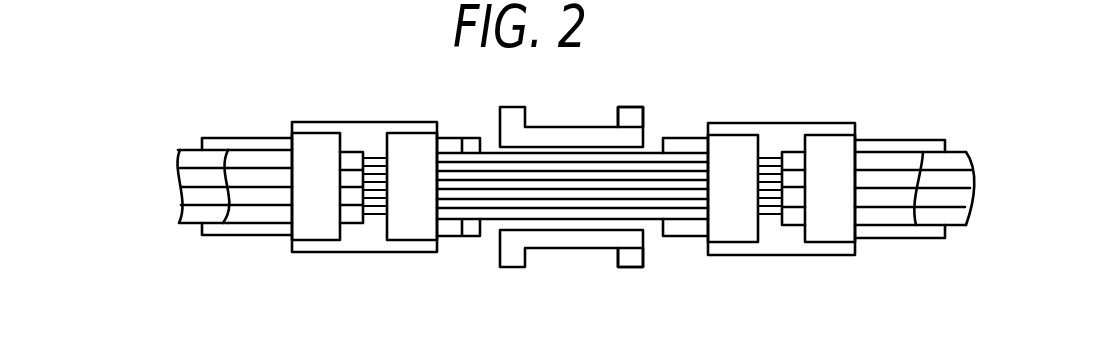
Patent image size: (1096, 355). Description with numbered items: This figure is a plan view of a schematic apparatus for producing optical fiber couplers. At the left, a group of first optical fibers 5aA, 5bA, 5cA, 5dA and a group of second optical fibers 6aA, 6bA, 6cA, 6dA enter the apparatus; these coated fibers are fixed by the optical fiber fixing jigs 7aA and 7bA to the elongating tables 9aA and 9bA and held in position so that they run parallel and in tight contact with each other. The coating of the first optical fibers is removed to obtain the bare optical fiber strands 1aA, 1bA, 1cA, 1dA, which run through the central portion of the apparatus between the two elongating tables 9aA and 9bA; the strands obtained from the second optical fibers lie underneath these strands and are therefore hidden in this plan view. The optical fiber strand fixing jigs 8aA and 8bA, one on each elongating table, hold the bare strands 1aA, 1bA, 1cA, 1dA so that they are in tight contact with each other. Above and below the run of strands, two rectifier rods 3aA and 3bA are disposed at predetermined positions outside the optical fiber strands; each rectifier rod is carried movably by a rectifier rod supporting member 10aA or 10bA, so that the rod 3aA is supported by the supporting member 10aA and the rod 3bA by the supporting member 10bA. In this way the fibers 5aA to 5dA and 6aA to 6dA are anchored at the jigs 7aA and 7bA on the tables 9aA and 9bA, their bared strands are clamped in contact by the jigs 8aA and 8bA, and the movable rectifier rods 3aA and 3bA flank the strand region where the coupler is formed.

The optical fiber strand 1aA is at (455, 223).
The optical fiber strand 1bA is at (490, 197).
The optical fiber strand 1cA is at (462, 157).
The optical fiber strand 1dA is at (489, 157).
The rectifier rod 3aA is at (570, 240).
The rectifier rod 3bA is at (563, 137).
The optical fiber 5aA is at (237, 215).
The optical fiber 5bA is at (257, 195).
The optical fiber 5cA is at (240, 172).
The optical fiber 5dA is at (265, 155).
The optical fiber 6aA is at (192, 215).
The optical fiber 6bA is at (188, 197).
The optical fiber 6cA is at (175, 175).
The optical fiber 6dA is at (187, 152).
The optical fiber fixing jig 7aA is at (315, 227).
The optical fiber fixing jig 7bA is at (830, 230).
The optical fiber strand fixing jig 8aA is at (411, 225).
The optical fiber strand fixing jig 8bA is at (728, 230).
The elongating table 9aA is at (360, 243).
The elongating table 9bA is at (780, 243).
The rectifier rod supporting member 10aA is at (630, 260).
The rectifier rod supporting member 10bA is at (629, 113).